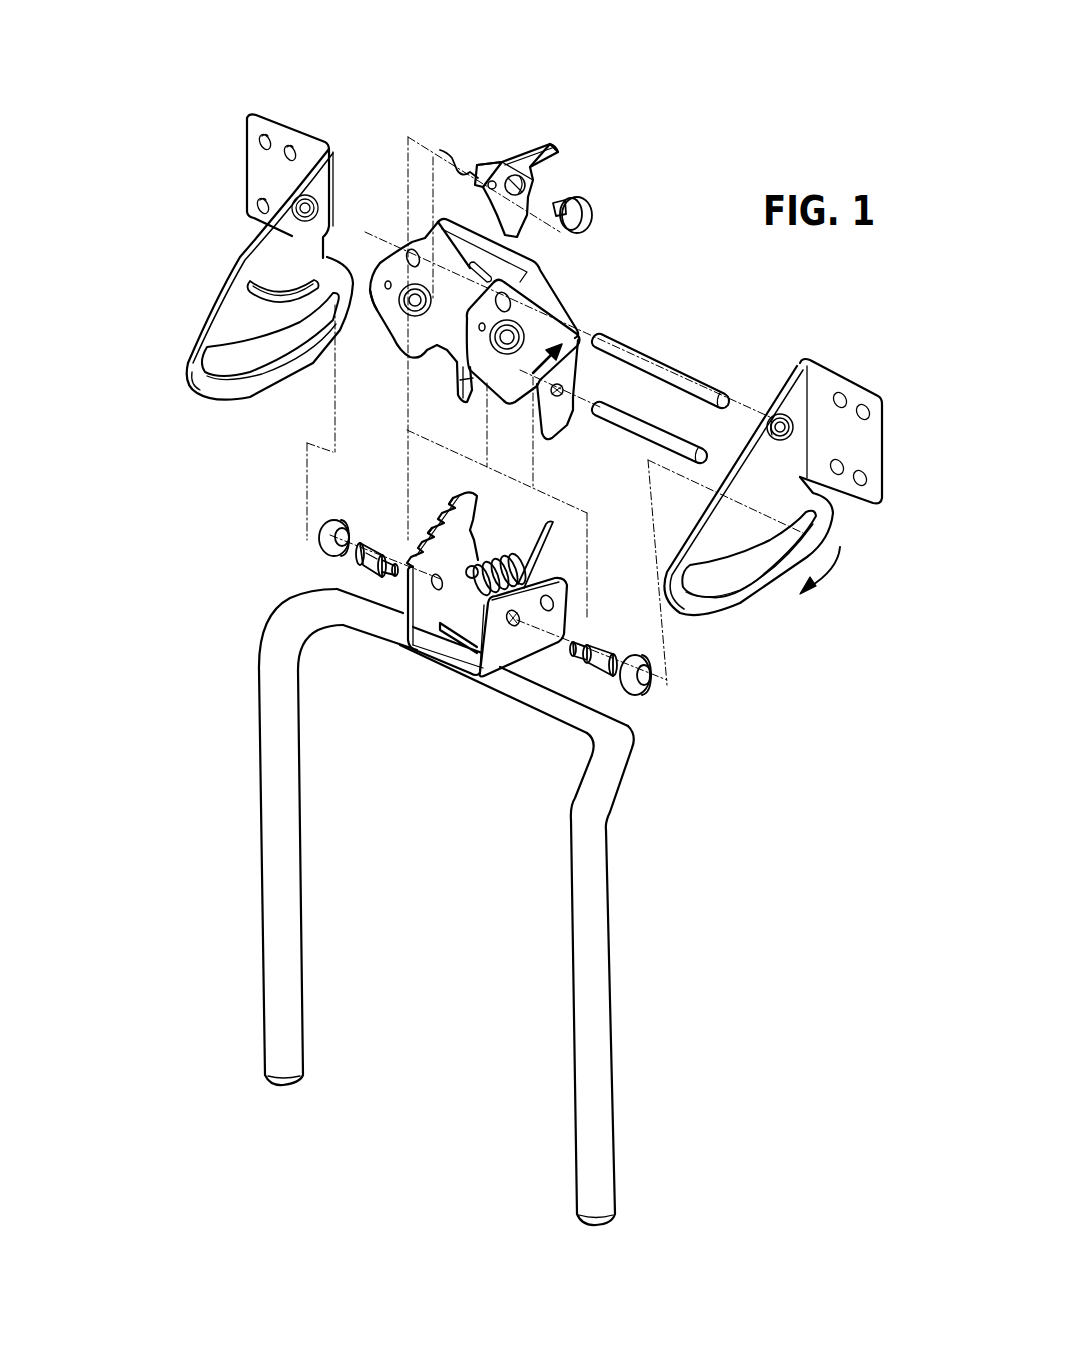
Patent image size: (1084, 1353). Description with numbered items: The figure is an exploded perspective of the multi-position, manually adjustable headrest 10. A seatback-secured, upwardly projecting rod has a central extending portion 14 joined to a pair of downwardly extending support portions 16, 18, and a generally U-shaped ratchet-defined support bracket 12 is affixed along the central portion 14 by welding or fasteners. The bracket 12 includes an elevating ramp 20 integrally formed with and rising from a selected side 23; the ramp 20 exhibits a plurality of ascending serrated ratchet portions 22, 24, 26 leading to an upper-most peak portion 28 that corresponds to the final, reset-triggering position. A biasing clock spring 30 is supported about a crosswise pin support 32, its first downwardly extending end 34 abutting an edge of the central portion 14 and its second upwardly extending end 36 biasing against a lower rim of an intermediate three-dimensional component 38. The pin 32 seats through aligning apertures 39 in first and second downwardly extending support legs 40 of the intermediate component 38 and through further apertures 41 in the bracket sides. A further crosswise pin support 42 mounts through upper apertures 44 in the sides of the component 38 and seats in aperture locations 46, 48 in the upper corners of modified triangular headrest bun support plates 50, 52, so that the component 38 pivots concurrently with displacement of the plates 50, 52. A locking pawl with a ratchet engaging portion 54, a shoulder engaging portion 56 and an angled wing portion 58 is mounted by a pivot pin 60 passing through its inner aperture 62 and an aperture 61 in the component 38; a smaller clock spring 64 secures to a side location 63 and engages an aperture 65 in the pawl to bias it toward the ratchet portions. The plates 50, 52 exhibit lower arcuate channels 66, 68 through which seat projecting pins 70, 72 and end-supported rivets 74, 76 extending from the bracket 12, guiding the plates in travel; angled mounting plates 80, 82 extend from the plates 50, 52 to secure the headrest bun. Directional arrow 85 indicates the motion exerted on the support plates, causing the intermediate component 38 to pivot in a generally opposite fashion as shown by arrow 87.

The ratchet adjustment assembly 10 is at (146, 535).
The support bracket 12 is at (447, 647).
The central extending portion 14 is at (528, 703).
The support portion 16 is at (258, 856).
The support portion 18 is at (578, 986).
The elevating ramp 20 is at (478, 542).
The ratchet defined portion 22 is at (370, 546).
The side 23 is at (530, 646).
The ratchet defined portion 24 is at (422, 538).
The ratchet defined portion 26 is at (428, 530).
The upper-most peak defined portion 28 is at (468, 490).
The biasing clock spring 30 is at (502, 556).
The pin support 32 is at (640, 437).
The first downwardly extending end 34 is at (430, 598).
The second upwardly extending end 36 is at (549, 532).
The intermediate component 38 is at (523, 270).
The aperture 39 is at (466, 402).
The support leg 40 is at (460, 372).
The aperture 41 is at (478, 565).
The pin support 42 is at (643, 361).
The aperture 44 is at (414, 251).
The aperture location 46 is at (300, 236).
The aperture location 48 is at (775, 413).
The headrest bun support plate 50 is at (222, 332).
The headrest bun support plate 52 is at (830, 512).
The ratchet engaging portion 54 is at (530, 186).
The shoulder engaging portion 56 is at (487, 170).
The angular configured wing portion 58 is at (548, 150).
The pivot pin 60 is at (590, 205).
The aperture 61 is at (401, 352).
The inner aperture 62 is at (514, 177).
The side location 63 is at (384, 284).
The clock spring 64 is at (450, 152).
The aperture 65 is at (490, 189).
The channel 66 is at (232, 373).
The channel 68 is at (758, 596).
The projecting pin 70 is at (362, 572).
The projecting pin 72 is at (600, 662).
The rivet 74 is at (320, 540).
The rivet 76 is at (660, 673).
The mounting plate 80 is at (256, 176).
The mounting plate 82 is at (876, 438).
The directional arrow 85 is at (830, 572).
The directional arrow 87 is at (565, 335).